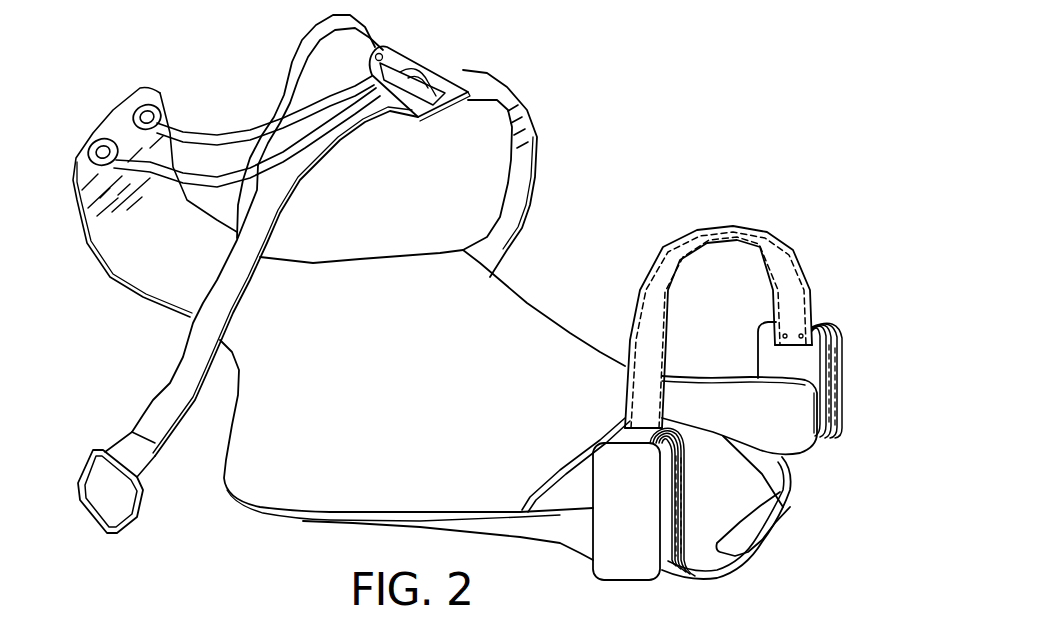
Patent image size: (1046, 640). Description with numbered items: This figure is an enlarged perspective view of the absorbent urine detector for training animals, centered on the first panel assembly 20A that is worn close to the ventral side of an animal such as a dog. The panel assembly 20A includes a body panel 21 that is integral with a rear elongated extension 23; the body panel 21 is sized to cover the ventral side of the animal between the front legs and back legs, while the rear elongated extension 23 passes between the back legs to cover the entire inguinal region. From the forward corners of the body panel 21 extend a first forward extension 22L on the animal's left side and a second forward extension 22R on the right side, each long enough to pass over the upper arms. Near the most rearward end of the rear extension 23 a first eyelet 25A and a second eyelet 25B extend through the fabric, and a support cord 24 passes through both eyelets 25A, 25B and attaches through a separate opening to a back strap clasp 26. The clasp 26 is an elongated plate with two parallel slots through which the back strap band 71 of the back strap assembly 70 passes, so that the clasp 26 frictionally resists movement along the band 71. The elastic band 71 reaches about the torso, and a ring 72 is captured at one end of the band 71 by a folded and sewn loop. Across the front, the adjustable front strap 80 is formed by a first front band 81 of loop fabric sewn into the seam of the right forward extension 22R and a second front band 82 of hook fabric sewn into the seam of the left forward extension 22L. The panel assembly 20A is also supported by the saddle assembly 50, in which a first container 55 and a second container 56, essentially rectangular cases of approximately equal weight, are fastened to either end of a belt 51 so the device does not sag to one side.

The first panel assembly 20A is at (590, 185).
The body panel 21 is at (450, 390).
The second forward extension 22R is at (568, 508).
The first forward extension 22L is at (780, 502).
The rear elongated extension 23 is at (138, 292).
The support cord 24 is at (300, 36).
The first eyelet 25A is at (113, 110).
The second eyelet 25B is at (145, 101).
The back strap clasp 26 is at (418, 48).
The saddle assembly 50 is at (753, 214).
The belt 51 is at (670, 300).
The first container 55 is at (823, 313).
The second container 56 is at (590, 452).
The back strap assembly 70 is at (523, 85).
The back strap band 71 is at (313, 175).
The ring 72 is at (122, 525).
The front strap 80 is at (745, 525).
The first front band 81 is at (737, 575).
The second front band 82 is at (790, 472).